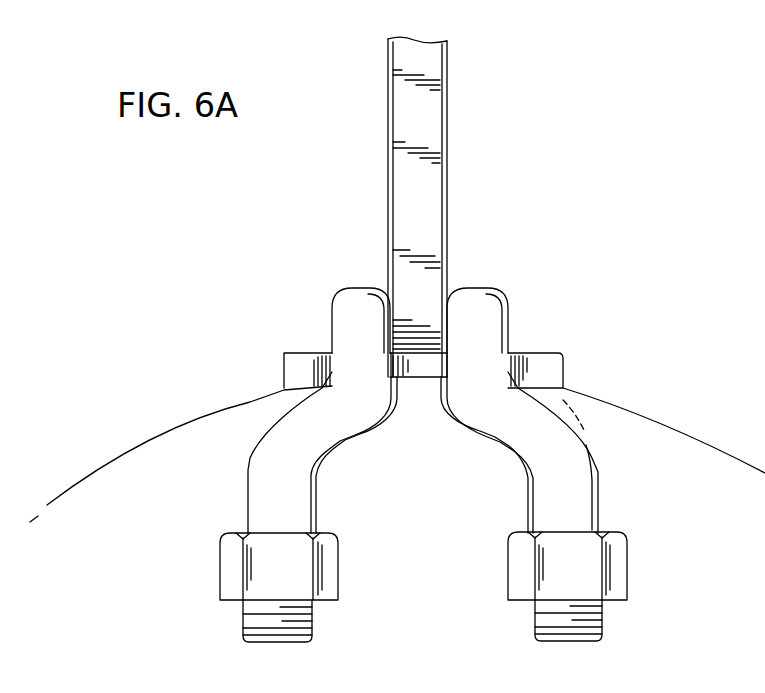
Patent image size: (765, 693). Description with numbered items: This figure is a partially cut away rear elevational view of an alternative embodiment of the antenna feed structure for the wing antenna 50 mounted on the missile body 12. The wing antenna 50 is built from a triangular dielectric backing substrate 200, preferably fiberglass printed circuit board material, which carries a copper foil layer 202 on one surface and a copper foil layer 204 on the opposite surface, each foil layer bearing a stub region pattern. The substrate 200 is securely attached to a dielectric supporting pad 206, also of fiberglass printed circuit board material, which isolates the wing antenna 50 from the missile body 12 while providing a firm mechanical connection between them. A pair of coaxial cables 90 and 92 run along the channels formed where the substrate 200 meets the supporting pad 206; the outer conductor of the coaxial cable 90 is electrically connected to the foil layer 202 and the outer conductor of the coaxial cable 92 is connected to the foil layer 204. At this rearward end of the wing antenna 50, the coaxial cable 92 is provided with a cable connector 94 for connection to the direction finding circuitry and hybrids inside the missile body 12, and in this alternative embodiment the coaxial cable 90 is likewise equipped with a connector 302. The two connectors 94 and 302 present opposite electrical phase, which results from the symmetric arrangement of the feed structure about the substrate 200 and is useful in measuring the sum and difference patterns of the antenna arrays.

The missile body 12 is at (630, 407).
The wing antenna 50 is at (447, 102).
The dielectric backing substrate 200 is at (424, 38).
The copper foil layer 202 is at (452, 184).
The copper foil layer 204 is at (391, 227).
The coaxial cable 90 is at (510, 318).
The dielectric supporting pad 206 is at (537, 350).
The coaxial cable 92 is at (253, 480).
The cable connector 94 is at (238, 580).
The connector 302 is at (613, 567).